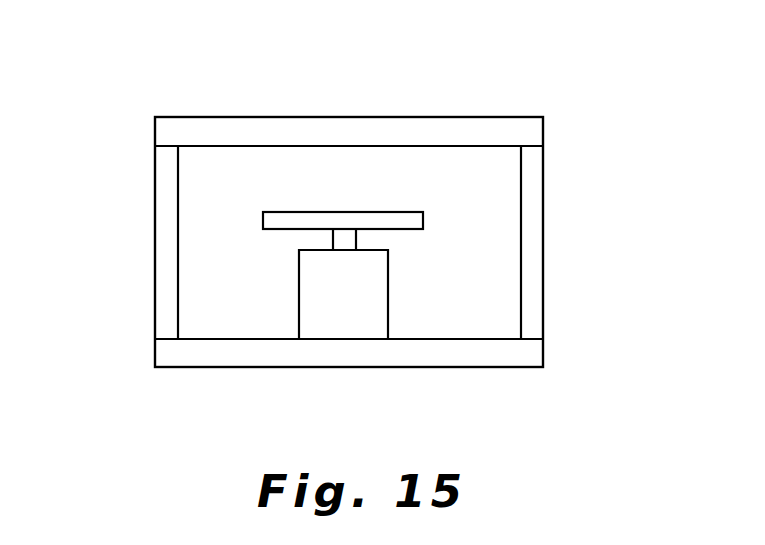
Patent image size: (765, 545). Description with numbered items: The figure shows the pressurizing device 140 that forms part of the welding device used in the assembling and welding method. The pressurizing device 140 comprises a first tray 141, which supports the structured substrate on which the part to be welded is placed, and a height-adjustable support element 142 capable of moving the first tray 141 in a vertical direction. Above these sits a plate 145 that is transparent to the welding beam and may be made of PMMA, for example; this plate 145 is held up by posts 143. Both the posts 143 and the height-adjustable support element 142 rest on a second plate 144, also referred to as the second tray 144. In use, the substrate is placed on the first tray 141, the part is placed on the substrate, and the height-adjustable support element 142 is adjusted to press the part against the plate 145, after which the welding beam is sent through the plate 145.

The pressurizing device 140 is at (379, 242).
The first tray 141 is at (413, 220).
The height-adjustable support element 142 is at (366, 295).
The posts 143 is at (170, 243).
The second plate 144 is at (459, 352).
The plate 145 is at (418, 132).